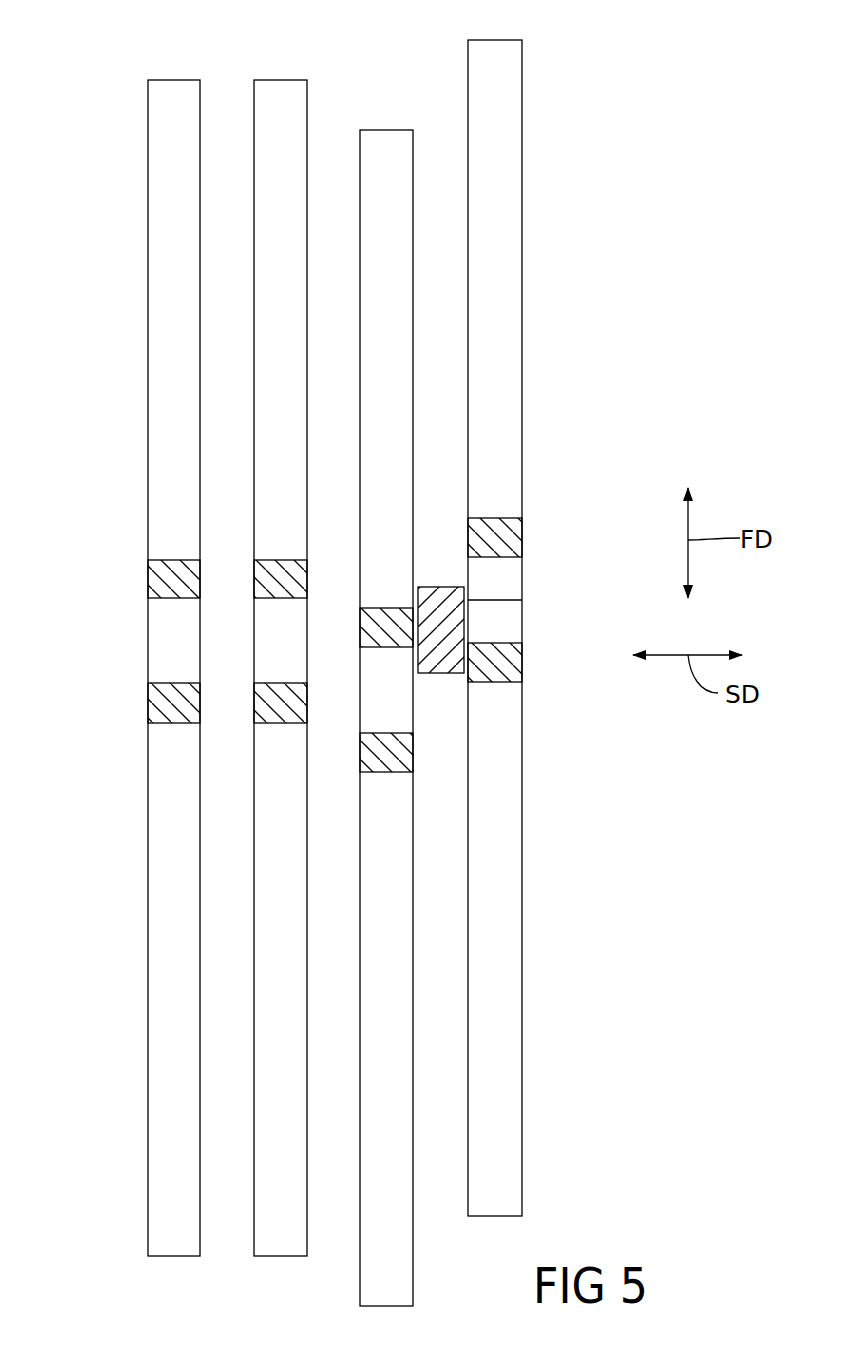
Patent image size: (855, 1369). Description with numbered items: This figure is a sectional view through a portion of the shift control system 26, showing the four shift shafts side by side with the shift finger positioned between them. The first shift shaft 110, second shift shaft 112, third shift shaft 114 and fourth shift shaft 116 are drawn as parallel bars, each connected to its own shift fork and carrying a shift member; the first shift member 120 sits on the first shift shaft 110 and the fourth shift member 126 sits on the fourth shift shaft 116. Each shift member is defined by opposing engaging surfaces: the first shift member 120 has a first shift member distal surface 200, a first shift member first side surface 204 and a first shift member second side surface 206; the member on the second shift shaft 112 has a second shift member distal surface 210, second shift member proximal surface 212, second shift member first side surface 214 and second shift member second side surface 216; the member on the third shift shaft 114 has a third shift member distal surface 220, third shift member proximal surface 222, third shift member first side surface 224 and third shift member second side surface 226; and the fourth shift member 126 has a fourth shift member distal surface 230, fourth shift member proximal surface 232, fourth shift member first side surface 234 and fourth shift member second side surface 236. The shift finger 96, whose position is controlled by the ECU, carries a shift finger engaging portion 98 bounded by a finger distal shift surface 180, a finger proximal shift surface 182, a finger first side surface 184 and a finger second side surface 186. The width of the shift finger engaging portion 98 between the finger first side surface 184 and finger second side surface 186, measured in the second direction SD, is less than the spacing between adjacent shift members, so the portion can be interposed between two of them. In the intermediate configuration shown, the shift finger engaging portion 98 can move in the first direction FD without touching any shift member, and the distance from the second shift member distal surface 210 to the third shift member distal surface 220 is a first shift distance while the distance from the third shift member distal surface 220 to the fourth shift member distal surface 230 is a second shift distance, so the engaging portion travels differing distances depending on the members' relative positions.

The shift control system 26 is at (112, 471).
The shift finger 96 is at (470, 703).
The shift finger engaging portion 98 is at (423, 590).
The first shift shaft 110 is at (178, 92).
The second shift shaft 112 is at (280, 92).
The third shift shaft 114 is at (383, 145).
The fourth shift shaft 116 is at (508, 50).
The first shift member 120 is at (163, 630).
The fourth shift member 126 is at (367, 718).
The finger distal shift surface 180 is at (433, 585).
The finger proximal shift surface 182 is at (442, 673).
The finger first side surface 184 is at (415, 665).
The finger second side surface 186 is at (468, 600).
The first shift member distal surface 200 is at (173, 597).
The first shift member first side surface 204 is at (147, 577).
The first shift member second side surface 206 is at (204, 577).
The second shift member distal surface 210 is at (183, 682).
The second shift member proximal surface 212 is at (283, 681).
The second shift member first side surface 214 is at (253, 567).
The second shift member second side surface 216 is at (310, 590).
The third shift member distal surface 220 is at (378, 670).
The third shift member proximal surface 222 is at (388, 732).
The third shift member first side surface 224 is at (357, 617).
The third shift member second side surface 226 is at (413, 757).
The fourth shift member distal surface 230 is at (495, 560).
The fourth shift member proximal surface 232 is at (513, 633).
The fourth shift member first side surface 234 is at (466, 538).
The fourth shift member second side surface 236 is at (523, 540).